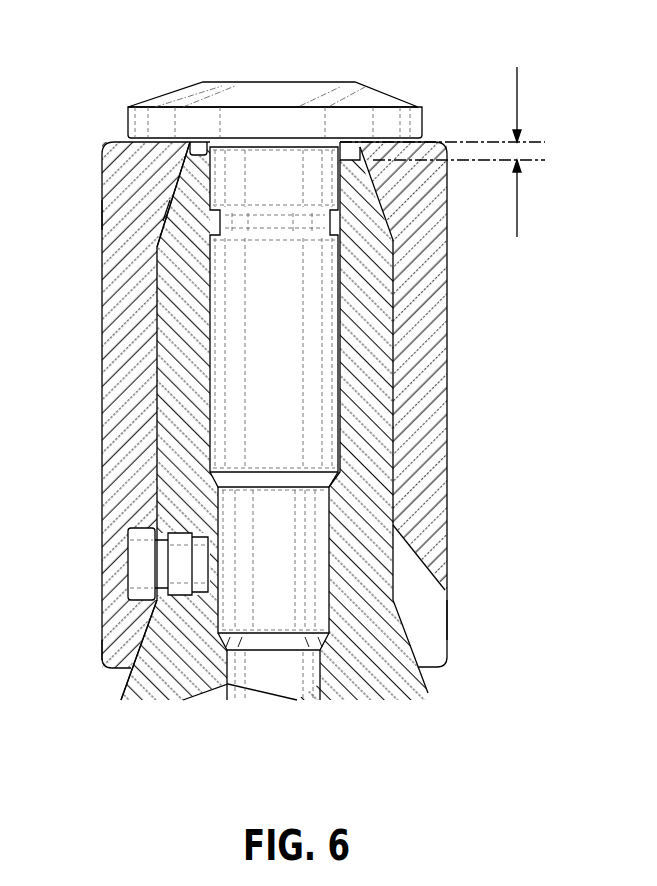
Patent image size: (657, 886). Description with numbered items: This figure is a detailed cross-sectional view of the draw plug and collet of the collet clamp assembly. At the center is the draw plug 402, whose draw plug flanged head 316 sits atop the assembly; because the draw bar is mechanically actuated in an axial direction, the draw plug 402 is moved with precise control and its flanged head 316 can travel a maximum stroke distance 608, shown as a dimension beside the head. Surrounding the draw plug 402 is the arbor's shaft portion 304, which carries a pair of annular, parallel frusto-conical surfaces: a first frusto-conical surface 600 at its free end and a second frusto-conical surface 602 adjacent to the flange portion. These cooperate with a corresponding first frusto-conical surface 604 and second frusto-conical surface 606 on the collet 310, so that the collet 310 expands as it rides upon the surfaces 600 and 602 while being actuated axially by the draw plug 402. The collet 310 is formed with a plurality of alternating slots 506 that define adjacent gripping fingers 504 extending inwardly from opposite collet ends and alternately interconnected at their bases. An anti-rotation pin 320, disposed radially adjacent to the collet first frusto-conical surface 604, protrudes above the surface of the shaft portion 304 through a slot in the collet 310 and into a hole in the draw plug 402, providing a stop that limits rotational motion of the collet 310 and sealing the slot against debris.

The draw plug flanged head 316 is at (354, 92).
The gripping fingers 504 is at (113, 353).
The collet 310 is at (440, 468).
The alternating slots 506 is at (113, 180).
The shaft portion 304 is at (172, 320).
The second frusto-conical surface 602 is at (169, 208).
The second frusto-conical surface 606 is at (163, 221).
The first frusto-conical surface 604 is at (145, 625).
The first frusto-conical surface 600 is at (152, 662).
The draw plug 402 is at (235, 422).
The anti-rotation pin 320 is at (140, 567).
The maximum stroke distance 608 is at (515, 93).